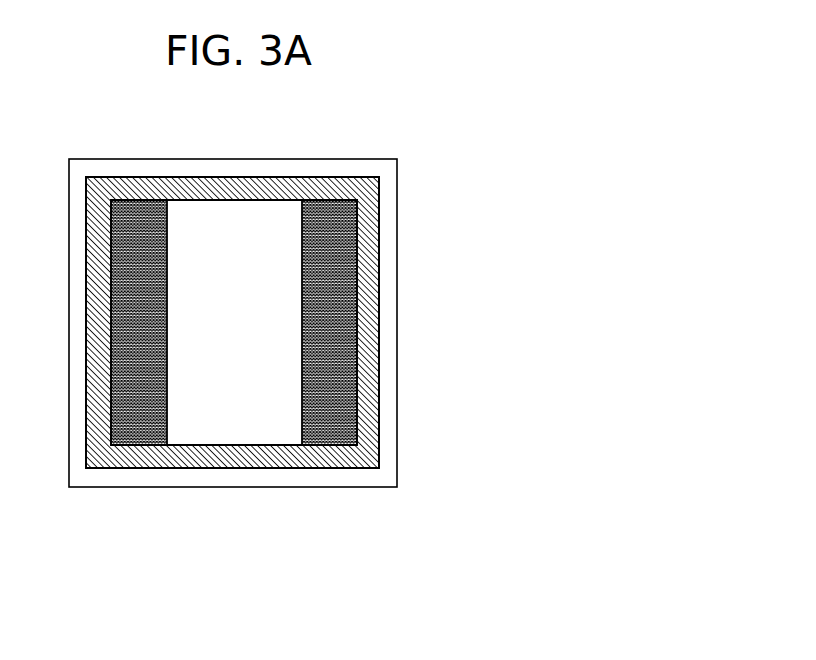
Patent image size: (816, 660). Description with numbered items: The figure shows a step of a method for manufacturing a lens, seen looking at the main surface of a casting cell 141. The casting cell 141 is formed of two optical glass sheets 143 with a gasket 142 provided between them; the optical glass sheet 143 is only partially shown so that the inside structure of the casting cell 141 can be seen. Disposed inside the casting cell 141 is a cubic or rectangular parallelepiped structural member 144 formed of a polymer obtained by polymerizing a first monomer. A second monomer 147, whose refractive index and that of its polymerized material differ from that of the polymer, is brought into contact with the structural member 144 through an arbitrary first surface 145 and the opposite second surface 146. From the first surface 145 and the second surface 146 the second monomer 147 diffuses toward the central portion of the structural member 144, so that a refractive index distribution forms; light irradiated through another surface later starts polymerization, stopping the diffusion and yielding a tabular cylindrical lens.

The casting cell 141 is at (397, 337).
The gasket 142 is at (375, 273).
The optical glass sheet 143 is at (387, 393).
The structural member 144 is at (228, 430).
The first surface 145 is at (145, 228).
The second surface 146 is at (330, 230).
The second monomer 147 is at (325, 432).